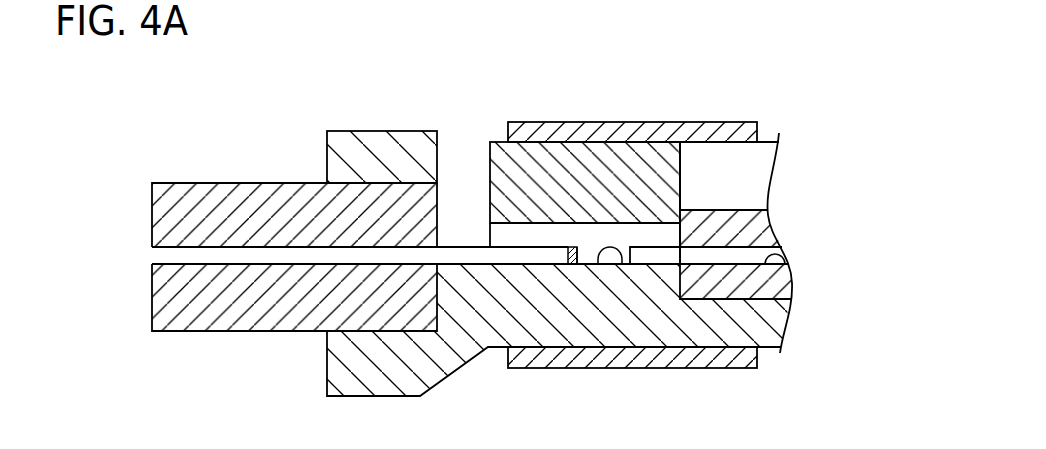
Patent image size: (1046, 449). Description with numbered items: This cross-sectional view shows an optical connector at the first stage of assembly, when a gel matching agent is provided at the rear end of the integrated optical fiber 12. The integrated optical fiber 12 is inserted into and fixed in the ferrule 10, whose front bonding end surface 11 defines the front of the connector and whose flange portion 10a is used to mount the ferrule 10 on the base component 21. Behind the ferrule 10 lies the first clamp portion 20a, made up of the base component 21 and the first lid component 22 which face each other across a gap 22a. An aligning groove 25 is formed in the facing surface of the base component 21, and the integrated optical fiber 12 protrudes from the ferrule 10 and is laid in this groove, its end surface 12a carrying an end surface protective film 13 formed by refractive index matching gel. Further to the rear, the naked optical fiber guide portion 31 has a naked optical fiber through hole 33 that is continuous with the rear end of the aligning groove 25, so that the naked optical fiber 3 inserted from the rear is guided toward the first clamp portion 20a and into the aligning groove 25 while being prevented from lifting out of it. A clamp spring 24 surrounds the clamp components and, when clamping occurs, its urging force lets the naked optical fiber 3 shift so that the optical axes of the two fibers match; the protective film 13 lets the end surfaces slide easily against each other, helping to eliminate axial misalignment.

The naked optical fiber 3 is at (650, 258).
The ferrule 10 is at (229, 195).
The flange portion 10a is at (381, 153).
The bonding end surface 11 is at (152, 300).
The integrated optical fiber 12 is at (467, 257).
The end surface of the integrated optical fiber 12a is at (577, 259).
The end surface protective film 13 is at (572, 247).
The first clamp portion 20a is at (770, 111).
The base component 21 is at (708, 330).
The first lid component 22 is at (648, 170).
The gap 22a is at (495, 236).
The clamp spring 24 is at (531, 122).
The aligning groove 25 is at (612, 265).
The naked optical fiber guide portion 31 is at (718, 208).
The naked optical fiber through hole 33 is at (776, 248).